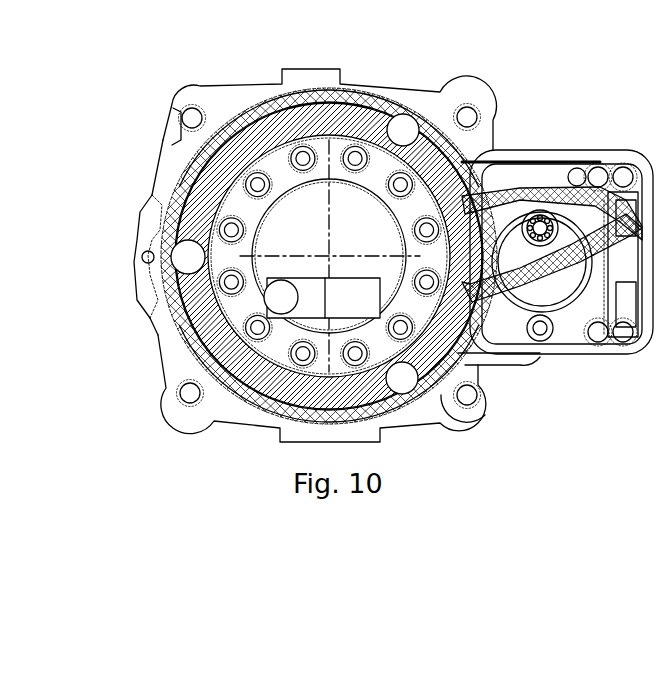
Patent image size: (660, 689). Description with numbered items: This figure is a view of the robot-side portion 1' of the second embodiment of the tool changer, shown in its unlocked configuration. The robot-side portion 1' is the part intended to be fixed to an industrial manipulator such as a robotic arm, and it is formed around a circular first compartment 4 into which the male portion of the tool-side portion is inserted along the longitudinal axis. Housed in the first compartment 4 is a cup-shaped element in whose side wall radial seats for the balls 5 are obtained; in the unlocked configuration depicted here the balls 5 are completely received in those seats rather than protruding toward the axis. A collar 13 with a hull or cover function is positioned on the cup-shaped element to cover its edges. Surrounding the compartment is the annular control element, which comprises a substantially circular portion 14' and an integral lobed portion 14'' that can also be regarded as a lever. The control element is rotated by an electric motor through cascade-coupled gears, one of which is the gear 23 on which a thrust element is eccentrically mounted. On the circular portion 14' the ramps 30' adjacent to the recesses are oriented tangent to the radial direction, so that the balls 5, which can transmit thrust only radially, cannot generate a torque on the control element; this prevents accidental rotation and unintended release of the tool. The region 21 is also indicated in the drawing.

The robot-side portion 1' is at (257, 255).
The first compartment 4 is at (274, 247).
The balls 5 is at (405, 128).
The collar 13 is at (156, 247).
The circular portion 14' is at (329, 226).
The lobed portion 14'' is at (555, 215).
The lever arm 21 is at (491, 210).
The gear 23 is at (556, 283).
The ramps 30' is at (329, 209).